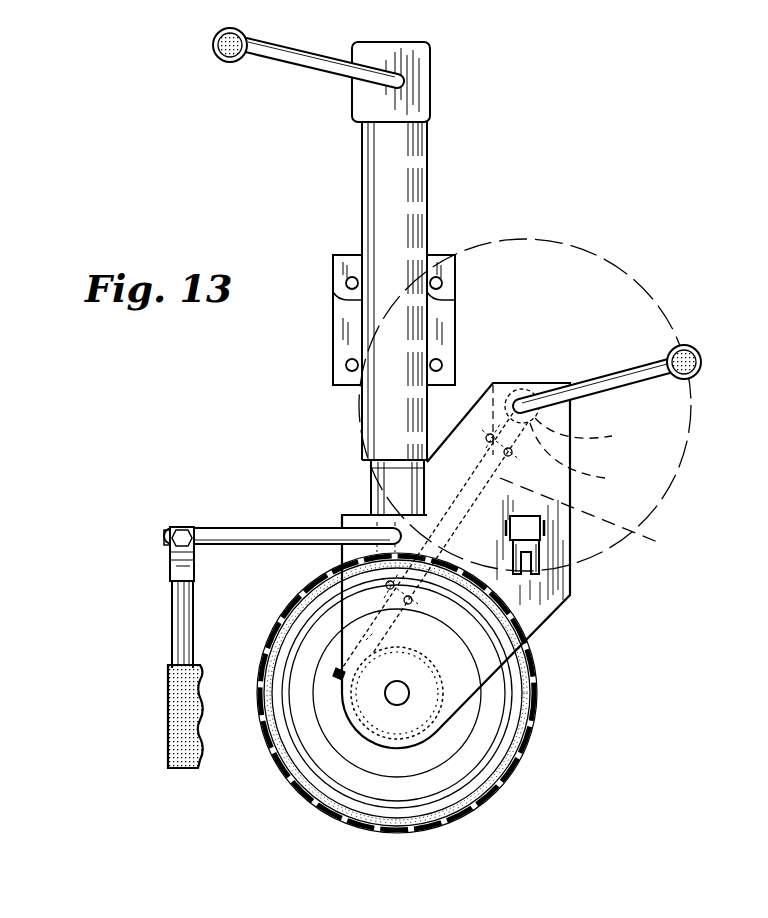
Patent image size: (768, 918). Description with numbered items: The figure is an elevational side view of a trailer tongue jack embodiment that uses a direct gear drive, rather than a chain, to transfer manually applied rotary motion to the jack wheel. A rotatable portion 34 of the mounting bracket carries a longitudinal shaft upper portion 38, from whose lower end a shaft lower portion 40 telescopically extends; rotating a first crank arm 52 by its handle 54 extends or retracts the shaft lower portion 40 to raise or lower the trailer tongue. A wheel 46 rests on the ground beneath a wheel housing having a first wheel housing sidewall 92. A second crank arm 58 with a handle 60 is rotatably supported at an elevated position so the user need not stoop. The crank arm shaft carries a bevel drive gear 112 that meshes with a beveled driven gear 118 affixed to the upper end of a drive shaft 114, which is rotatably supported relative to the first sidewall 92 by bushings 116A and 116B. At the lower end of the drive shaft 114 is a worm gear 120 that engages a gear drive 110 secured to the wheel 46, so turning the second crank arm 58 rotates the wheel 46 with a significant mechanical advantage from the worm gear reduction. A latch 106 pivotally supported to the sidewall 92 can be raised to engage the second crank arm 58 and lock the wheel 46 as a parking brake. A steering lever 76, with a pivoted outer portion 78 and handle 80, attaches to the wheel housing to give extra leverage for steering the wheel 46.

The rotatable portion 34 is at (332, 258).
The shaft upper portion 38 is at (402, 192).
The shaft lower portion 40 is at (370, 490).
The wheel 46 is at (497, 758).
The first crank arm 52 is at (318, 74).
The handle 54 is at (227, 52).
The second crank arm 58 is at (607, 372).
The handle 60 is at (686, 352).
The steering lever 76 is at (258, 535).
The pivoted outer portion 78 is at (180, 615).
The handle 80 is at (178, 713).
The first wheel housing sidewall 92 is at (517, 605).
The latch 106 is at (538, 563).
The gear drive 110 is at (417, 707).
The bevel drive gear 112 is at (605, 436).
The drive shaft 114 is at (610, 522).
The bushing 116A is at (493, 373).
The bushing 116B is at (413, 610).
The beveled driven gear 118 is at (599, 458).
The worm gear 120 is at (340, 678).